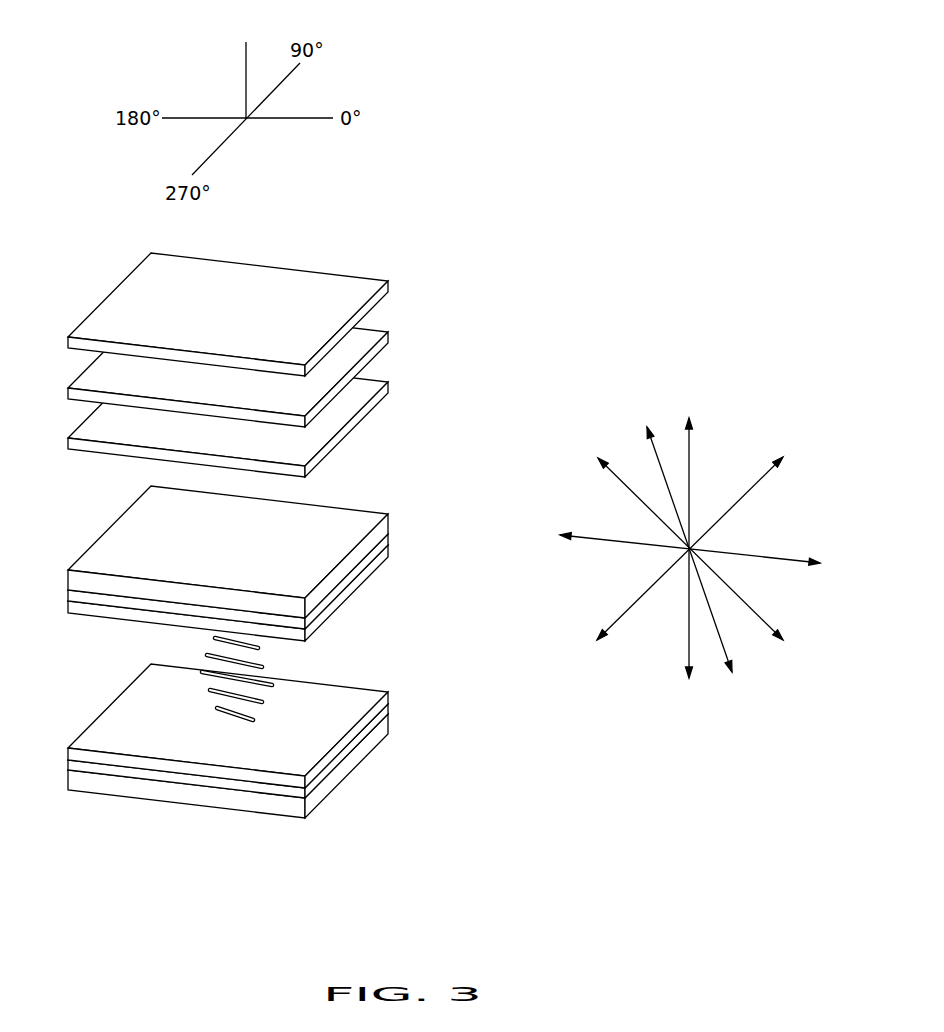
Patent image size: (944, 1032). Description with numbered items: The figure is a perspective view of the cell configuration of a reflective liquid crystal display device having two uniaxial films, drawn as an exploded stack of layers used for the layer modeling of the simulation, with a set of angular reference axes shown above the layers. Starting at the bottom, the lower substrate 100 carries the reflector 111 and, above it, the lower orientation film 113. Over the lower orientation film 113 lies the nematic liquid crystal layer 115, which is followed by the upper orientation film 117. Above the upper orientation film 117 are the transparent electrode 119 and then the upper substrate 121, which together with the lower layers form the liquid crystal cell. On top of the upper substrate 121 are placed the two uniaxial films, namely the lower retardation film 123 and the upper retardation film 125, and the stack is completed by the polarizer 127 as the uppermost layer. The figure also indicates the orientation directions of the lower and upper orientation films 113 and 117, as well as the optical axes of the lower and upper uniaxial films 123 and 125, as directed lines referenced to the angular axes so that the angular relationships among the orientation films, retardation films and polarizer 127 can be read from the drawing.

The lower substrate 100 is at (362, 752).
The reflector 111 is at (390, 718).
The lower orientation film 113 is at (387, 698).
The nematic liquid crystal layer 115 is at (278, 642).
The upper orientation film 117 is at (355, 593).
The transparent electrode 119 is at (387, 562).
The upper substrate 121 is at (385, 530).
The lower retardation film 123 is at (88, 422).
The upper retardation film 125 is at (90, 372).
The polarizer 127 is at (118, 290).